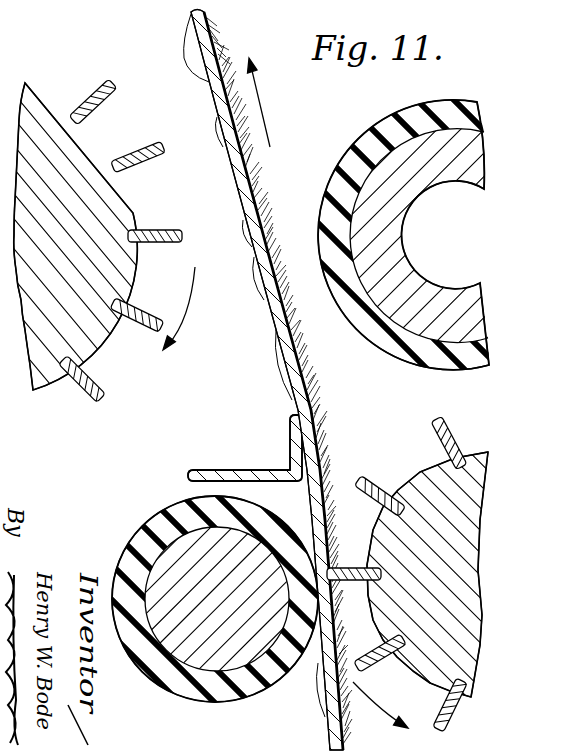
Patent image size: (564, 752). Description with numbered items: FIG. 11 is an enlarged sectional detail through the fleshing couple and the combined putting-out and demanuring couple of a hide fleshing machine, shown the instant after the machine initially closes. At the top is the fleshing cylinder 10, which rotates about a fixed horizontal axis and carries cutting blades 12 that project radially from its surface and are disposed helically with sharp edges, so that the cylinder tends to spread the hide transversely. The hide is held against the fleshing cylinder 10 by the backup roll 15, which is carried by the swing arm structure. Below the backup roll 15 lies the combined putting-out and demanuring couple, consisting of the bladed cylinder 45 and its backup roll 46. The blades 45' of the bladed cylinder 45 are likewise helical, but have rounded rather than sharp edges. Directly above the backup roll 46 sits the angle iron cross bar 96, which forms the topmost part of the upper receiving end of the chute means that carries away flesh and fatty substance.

The fleshing cylinder 10 is at (128, 198).
The cutting blades 12 is at (131, 150).
The backup roll 15 is at (386, 128).
The bladed cylinder 45 is at (282, 376).
The blades 45' is at (397, 574).
The backup roll 46 is at (166, 503).
The angle iron cross bar 96 is at (253, 470).